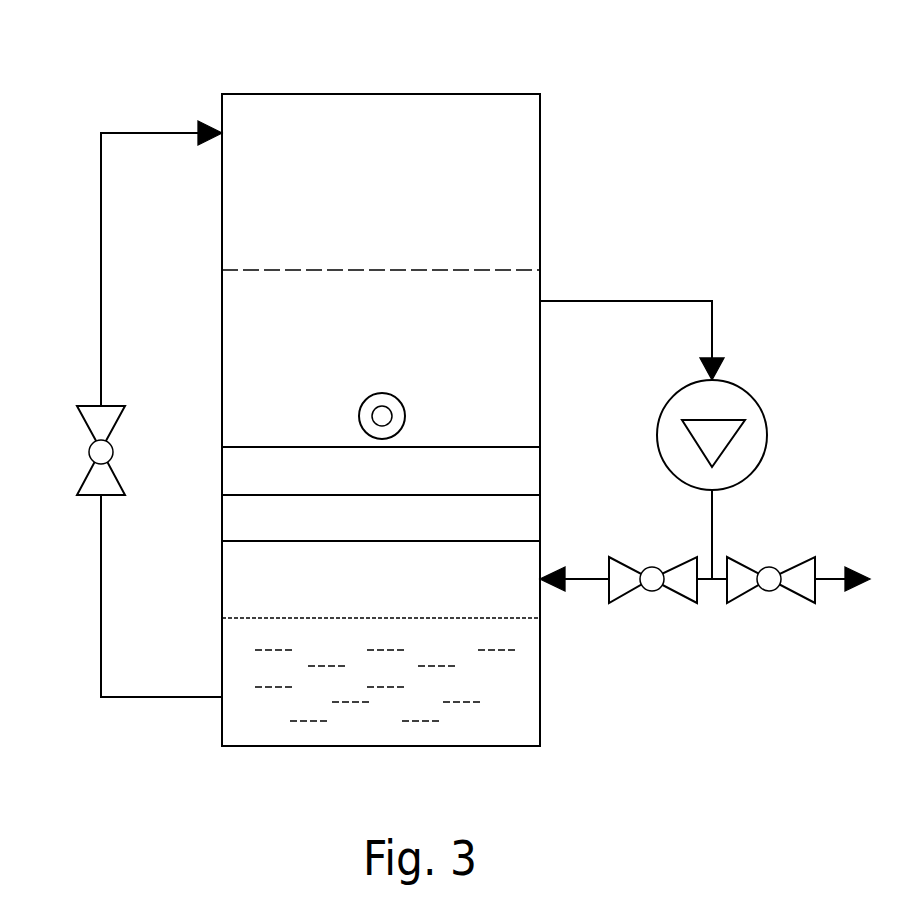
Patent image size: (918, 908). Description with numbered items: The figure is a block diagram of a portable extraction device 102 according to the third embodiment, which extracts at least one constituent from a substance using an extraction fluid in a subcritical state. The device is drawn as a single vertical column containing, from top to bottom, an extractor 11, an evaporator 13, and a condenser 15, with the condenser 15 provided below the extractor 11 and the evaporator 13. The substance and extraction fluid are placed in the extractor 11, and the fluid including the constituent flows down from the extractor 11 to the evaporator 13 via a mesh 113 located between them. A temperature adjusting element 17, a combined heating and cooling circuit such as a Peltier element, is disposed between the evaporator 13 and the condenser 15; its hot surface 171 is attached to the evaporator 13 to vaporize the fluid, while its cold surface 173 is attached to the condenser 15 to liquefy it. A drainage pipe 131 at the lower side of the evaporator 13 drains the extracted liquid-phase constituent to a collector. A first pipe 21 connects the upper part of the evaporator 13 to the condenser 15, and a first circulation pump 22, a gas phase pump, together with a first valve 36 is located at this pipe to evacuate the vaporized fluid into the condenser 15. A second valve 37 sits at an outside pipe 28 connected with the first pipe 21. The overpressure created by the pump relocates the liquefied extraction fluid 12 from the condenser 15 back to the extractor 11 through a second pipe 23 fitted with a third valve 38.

The portable extraction device 102 is at (759, 45).
The extractor 11 is at (500, 221).
The mesh 113 is at (352, 270).
The evaporator 13 is at (500, 375).
The drainage pipe 131 is at (395, 413).
The temperature adjusting element 17 is at (338, 387).
The hot surface 171 is at (267, 480).
The cold surface 173 is at (298, 515).
The condenser 15 is at (500, 597).
The extraction fluid 12 is at (495, 690).
The first pipe 21 is at (712, 318).
The first circulation pump 22 is at (714, 436).
The second pipe 23 is at (101, 322).
The outside pipe 28 is at (833, 575).
The first valve 36 is at (680, 585).
The second valve 37 is at (798, 585).
The third valve 38 is at (95, 478).